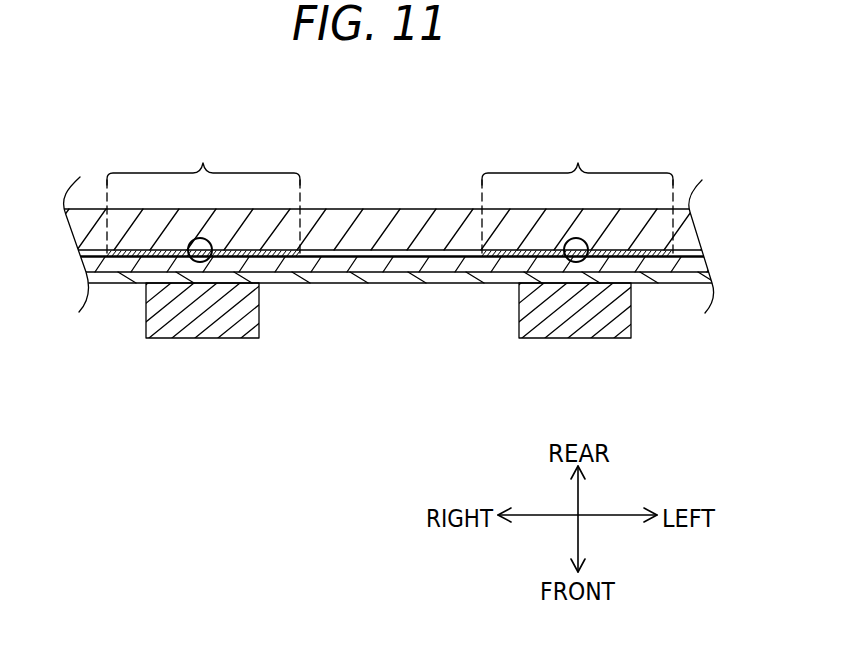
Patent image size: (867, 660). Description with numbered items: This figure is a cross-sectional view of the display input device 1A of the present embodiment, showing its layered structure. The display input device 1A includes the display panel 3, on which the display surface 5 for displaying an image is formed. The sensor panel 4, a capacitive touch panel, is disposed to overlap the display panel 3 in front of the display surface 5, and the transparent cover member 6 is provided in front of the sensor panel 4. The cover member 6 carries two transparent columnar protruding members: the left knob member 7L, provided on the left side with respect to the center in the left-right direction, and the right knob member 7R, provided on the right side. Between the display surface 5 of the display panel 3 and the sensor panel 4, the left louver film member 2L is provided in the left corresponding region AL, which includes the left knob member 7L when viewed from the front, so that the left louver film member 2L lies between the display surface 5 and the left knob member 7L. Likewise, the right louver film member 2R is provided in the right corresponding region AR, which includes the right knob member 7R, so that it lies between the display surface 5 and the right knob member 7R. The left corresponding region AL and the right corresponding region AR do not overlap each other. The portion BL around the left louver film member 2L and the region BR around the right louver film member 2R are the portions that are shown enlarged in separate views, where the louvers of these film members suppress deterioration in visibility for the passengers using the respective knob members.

The display input device 1A is at (396, 107).
The display panel 3 is at (688, 236).
The sensor panel 4 is at (698, 263).
The display surface 5 is at (388, 252).
The cover member 6 is at (698, 275).
The right louver film member 2R is at (140, 257).
The left louver film member 2L is at (523, 256).
The right knob member 7R is at (197, 337).
The left knob member 7L is at (573, 333).
The right corresponding region AR is at (203, 196).
The left corresponding region AL is at (577, 196).
The region BR is at (201, 238).
The portion BL is at (577, 238).